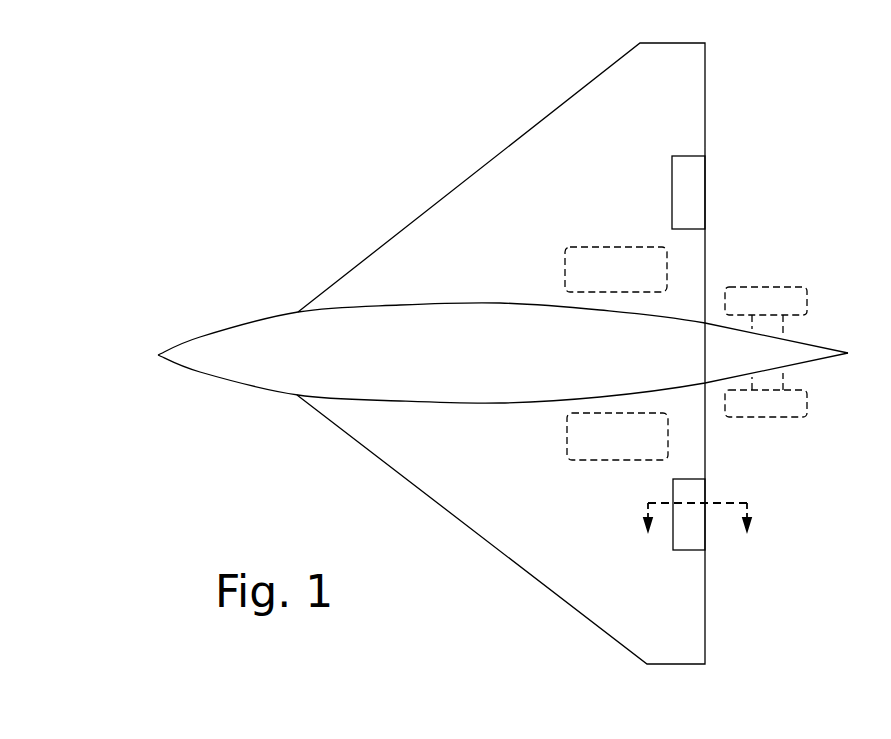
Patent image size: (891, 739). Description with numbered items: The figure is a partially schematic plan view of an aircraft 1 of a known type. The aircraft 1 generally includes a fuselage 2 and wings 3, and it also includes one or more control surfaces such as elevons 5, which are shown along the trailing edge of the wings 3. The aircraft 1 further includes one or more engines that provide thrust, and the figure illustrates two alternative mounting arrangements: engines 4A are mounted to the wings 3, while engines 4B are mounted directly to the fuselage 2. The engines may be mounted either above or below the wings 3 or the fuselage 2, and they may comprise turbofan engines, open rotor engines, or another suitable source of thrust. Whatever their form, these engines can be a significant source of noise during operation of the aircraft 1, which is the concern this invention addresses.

The aircraft 1 is at (499, 353).
The fuselage 2 is at (268, 330).
The wings 3 is at (477, 182).
The engines 4A is at (667, 261).
The engines 4B is at (777, 287).
The elevons 5 is at (690, 177).